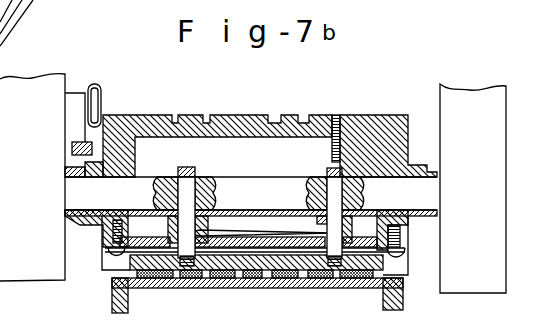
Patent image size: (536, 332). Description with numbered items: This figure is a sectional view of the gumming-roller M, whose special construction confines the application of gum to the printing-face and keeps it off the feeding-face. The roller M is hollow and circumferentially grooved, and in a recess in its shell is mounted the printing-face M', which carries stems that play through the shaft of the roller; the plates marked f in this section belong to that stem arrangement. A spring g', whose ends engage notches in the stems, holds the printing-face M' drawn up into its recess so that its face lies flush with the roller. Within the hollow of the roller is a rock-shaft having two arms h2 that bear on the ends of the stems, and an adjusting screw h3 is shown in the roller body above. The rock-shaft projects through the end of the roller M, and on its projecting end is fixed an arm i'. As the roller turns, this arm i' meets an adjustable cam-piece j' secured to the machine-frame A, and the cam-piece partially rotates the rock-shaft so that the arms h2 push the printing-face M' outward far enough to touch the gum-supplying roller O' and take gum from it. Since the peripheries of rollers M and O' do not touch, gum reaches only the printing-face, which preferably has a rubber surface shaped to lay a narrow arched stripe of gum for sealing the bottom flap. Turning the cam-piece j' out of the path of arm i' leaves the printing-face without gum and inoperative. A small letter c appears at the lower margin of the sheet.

The frame A is at (253, 183).
The gumming-roller M is at (251, 135).
The printing-face M' is at (251, 260).
The gum-supplying roller O' is at (257, 301).
The plate f is at (260, 221).
The spring g' is at (258, 224).
The arms h2 is at (186, 167).
The screw h3 is at (333, 150).
The arm i' is at (68, 151).
The cam-piece j' is at (69, 113).
The part c is at (19, 322).